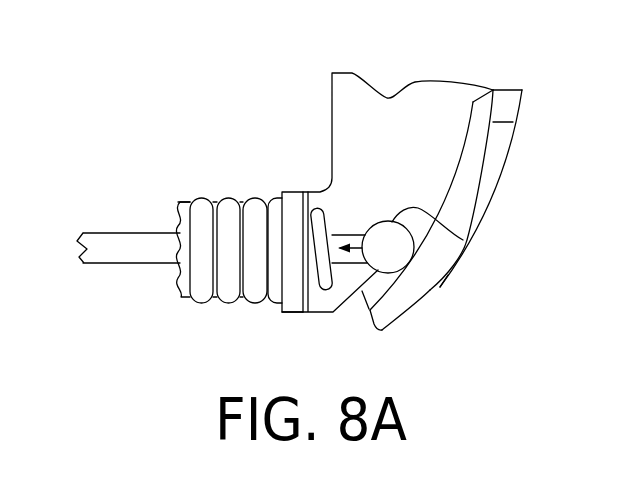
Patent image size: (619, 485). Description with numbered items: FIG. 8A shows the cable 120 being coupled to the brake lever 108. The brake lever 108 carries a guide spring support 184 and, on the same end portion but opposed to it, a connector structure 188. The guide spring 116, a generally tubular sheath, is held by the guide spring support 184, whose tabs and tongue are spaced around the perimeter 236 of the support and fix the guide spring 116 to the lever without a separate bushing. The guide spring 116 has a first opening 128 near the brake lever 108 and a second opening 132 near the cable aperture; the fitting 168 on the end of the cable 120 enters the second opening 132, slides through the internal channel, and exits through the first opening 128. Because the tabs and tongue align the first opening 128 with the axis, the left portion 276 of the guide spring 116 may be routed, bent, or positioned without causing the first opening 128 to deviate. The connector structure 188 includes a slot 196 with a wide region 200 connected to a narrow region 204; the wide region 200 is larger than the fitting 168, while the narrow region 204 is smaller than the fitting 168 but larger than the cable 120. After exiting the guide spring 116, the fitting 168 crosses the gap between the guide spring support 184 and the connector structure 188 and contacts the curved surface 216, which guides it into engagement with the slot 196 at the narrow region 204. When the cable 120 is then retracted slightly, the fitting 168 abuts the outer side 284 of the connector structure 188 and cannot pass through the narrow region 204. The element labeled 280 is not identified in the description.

The brake lever 108 is at (347, 93).
The guide spring 116 is at (171, 250).
The cable 120 is at (131, 258).
The first opening 128 is at (385, 220).
The second opening 132 is at (180, 223).
The fitting 168 is at (463, 240).
The guide spring support 184 is at (259, 231).
The connector structure 188 is at (511, 172).
The slot 196 is at (427, 286).
The wide region 200 is at (452, 189).
The narrow region 204 is at (457, 278).
The curved surface 216 is at (462, 202).
The perimeter 236 is at (290, 300).
The left portion 276 is at (228, 207).
The washer 280 is at (325, 198).
The outer side 284 is at (500, 179).